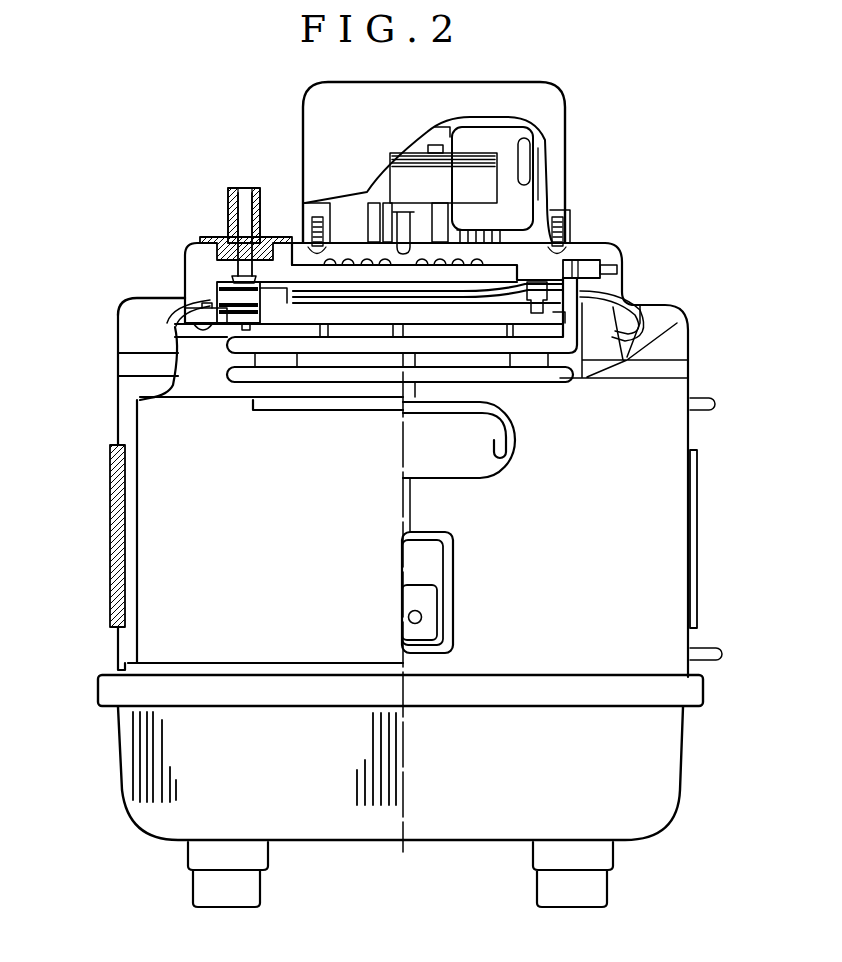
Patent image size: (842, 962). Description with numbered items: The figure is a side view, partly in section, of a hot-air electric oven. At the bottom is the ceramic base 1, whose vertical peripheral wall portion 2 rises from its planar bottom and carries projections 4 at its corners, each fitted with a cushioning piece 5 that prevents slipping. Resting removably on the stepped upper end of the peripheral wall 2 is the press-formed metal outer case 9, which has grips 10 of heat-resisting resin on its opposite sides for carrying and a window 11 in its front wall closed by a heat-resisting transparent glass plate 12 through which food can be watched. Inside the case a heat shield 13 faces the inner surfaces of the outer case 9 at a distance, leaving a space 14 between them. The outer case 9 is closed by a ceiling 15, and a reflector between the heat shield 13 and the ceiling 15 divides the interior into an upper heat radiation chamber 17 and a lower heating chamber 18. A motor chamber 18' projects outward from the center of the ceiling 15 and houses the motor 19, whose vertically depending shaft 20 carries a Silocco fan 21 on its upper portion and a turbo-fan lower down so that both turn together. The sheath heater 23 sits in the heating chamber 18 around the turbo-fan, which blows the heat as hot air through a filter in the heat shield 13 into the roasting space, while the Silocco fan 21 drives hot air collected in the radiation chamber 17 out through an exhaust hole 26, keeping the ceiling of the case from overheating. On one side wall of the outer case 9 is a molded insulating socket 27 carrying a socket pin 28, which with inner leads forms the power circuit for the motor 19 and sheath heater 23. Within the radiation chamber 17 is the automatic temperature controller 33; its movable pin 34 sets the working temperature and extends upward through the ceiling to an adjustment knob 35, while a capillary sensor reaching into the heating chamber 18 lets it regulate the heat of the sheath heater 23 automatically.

The base 1 is at (118, 750).
The peripheral wall portion 2 is at (97, 688).
The projections 4 is at (187, 858).
The cushioning pieces 5 is at (197, 887).
The outer case 9 is at (116, 424).
The grips 10 is at (492, 468).
The window 11 is at (77, 622).
The heat-resisting transparent glass plate 12 is at (113, 530).
The heat shield 13 is at (139, 428).
The space 14 is at (127, 388).
The ceiling 15 is at (140, 298).
The heat radiation chamber 17 is at (197, 267).
The heating chamber 18 is at (172, 383).
The motor chamber 18' is at (466, 162).
The motor 19 is at (487, 190).
The shaft 20 is at (400, 223).
The Silocco fan 21 is at (503, 277).
The sheath heater 23 is at (563, 347).
The exhaust hole 26 is at (347, 255).
The socket 27 is at (450, 560).
The socket pin 28 is at (422, 615).
The automatic temperature controller 33 is at (220, 290).
The movable pin 34 is at (243, 218).
The adjustment knob 35 is at (240, 188).